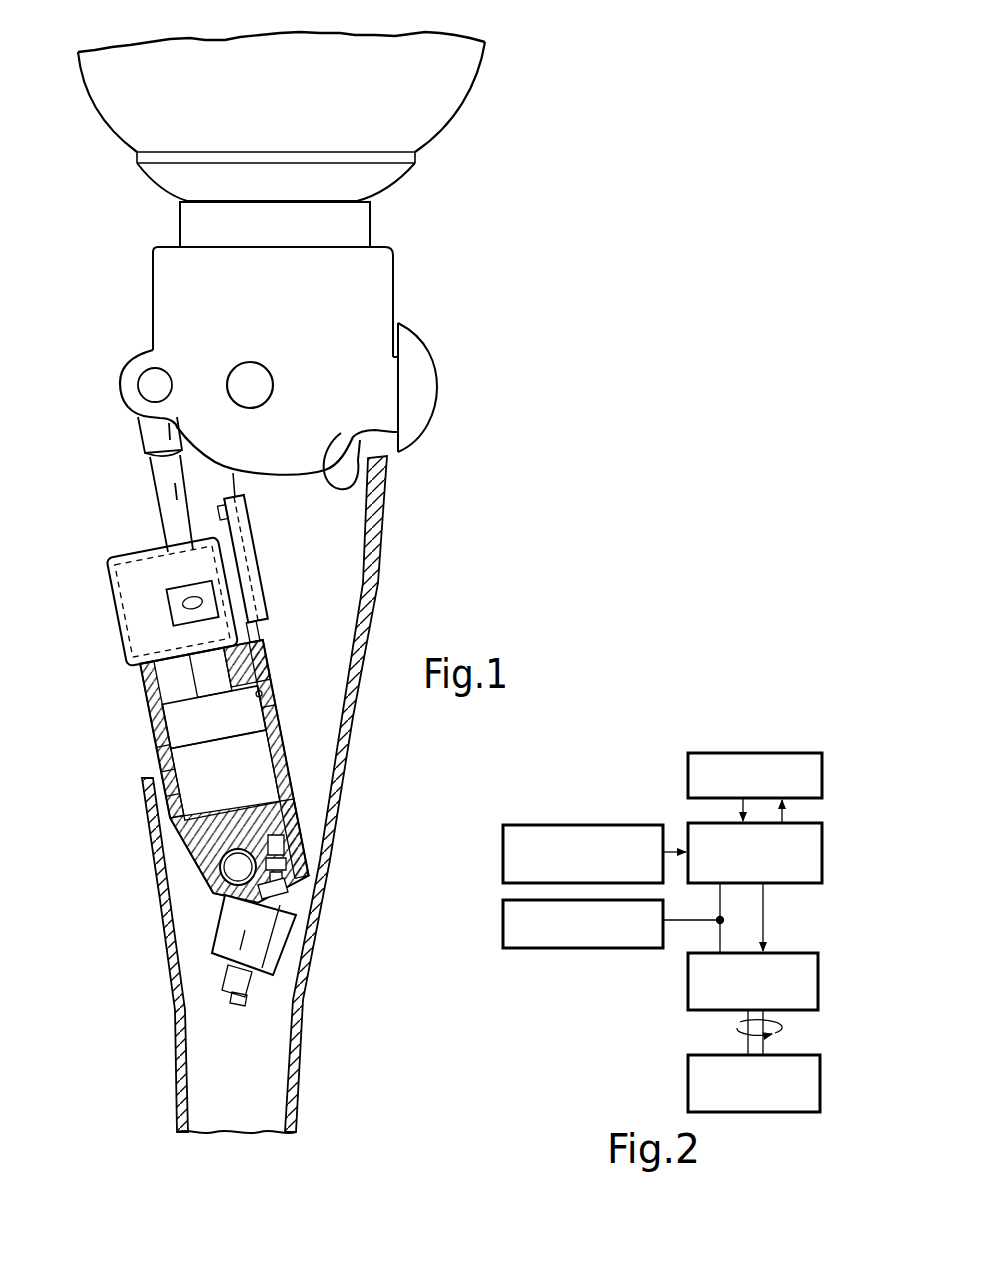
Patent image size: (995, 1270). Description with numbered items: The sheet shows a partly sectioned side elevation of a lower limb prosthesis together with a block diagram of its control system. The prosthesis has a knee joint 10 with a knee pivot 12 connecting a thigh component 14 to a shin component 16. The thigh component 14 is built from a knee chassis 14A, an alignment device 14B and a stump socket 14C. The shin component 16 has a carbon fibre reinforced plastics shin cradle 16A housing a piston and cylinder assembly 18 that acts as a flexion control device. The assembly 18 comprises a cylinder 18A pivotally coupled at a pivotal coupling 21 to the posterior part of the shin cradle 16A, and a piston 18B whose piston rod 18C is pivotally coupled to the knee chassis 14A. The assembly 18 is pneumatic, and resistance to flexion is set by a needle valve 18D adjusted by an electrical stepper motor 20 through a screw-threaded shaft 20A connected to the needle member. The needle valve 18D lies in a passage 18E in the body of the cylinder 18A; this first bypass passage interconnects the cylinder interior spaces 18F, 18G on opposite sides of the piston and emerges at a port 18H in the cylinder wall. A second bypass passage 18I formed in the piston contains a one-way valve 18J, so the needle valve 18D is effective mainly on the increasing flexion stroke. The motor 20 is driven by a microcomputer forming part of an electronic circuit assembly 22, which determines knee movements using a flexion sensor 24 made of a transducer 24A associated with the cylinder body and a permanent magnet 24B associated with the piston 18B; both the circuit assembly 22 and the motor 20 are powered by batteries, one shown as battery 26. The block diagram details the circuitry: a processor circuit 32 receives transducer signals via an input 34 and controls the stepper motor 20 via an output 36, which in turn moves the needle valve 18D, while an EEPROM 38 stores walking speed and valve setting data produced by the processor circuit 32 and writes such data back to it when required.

In FIG. 1, the knee joint 10 is at (352, 410).
In FIG. 1, the knee pivot 12 is at (262, 388).
In FIG. 1, the thigh component 14 is at (296, 194).
In FIG. 1, the knee chassis 14A is at (166, 291).
In FIG. 1, the alignment device 14B is at (188, 228).
In FIG. 1, the stump socket 14C is at (128, 100).
In FIG. 1, the shin component 16 is at (330, 794).
In FIG. 1, the shin cradle 16A is at (374, 582).
In FIG. 1, the piston and cylinder assembly 18 is at (120, 723).
In FIG. 1, the cylinder 18A is at (143, 727).
In FIG. 1, the piston 18B is at (284, 722).
In FIG. 1, the piston rod 18C is at (172, 496).
In FIG. 1, the needle valve 18D is at (287, 856).
In FIG. 2, the needle valve 18D is at (820, 1090).
In FIG. 1, the passage 18E is at (290, 817).
In FIG. 1, the cylinder interior space 18F is at (266, 780).
In FIG. 1, the cylinder interior space 18G is at (156, 702).
In FIG. 1, the port 18H is at (270, 690).
In FIG. 1, the second bypass passage 18I is at (145, 752).
In FIG. 1, the one-way valve 18J is at (143, 768).
In FIG. 1, the stepper motor 20 is at (288, 950).
In FIG. 2, the stepper motor 20 is at (818, 986).
In FIG. 1, the screw-threaded shaft 20A is at (275, 896).
In FIG. 1, the pivotal coupling 21 is at (233, 870).
In FIG. 1, the electronic circuit assembly 22 is at (252, 592).
In FIG. 2, the flexion sensor 24 is at (560, 825).
In FIG. 1, the transducer 24A is at (258, 640).
In FIG. 1, the permanent magnet 24B is at (276, 660).
In FIG. 1, the battery 26 is at (112, 620).
In FIG. 2, the battery 26 is at (590, 948).
In FIG. 2, the processor circuit 32 is at (822, 855).
In FIG. 2, the input 34 is at (676, 850).
In FIG. 2, the output 36 is at (763, 908).
In FIG. 2, the EEPROM 38 is at (822, 783).